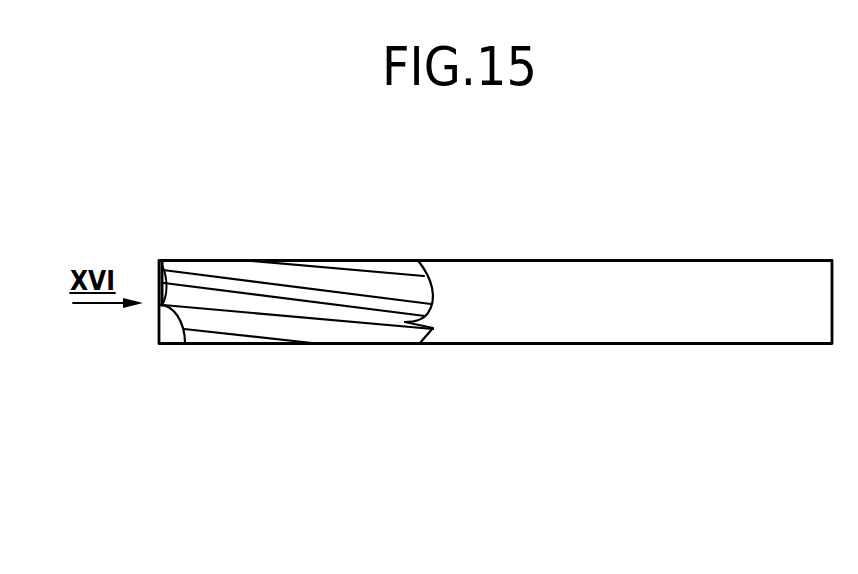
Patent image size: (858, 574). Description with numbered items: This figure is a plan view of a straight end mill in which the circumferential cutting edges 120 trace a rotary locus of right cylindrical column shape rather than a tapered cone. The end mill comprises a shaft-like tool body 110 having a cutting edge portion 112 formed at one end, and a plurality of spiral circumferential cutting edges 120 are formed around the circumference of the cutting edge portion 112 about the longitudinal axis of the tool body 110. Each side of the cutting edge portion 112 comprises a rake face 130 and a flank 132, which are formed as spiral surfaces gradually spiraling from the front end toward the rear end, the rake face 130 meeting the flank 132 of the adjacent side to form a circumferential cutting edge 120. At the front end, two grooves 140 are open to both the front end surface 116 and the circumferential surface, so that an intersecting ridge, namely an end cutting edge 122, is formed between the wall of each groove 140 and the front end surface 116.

The tool body 110 is at (634, 278).
The cutting edge portion 112 is at (337, 352).
The front end surface 116 is at (160, 277).
The circumferential cutting edges 120 is at (256, 288).
The end cutting edges 122 is at (158, 316).
The rake face 130 is at (394, 300).
The flank 132 is at (360, 286).
The grooves 140 is at (168, 332).